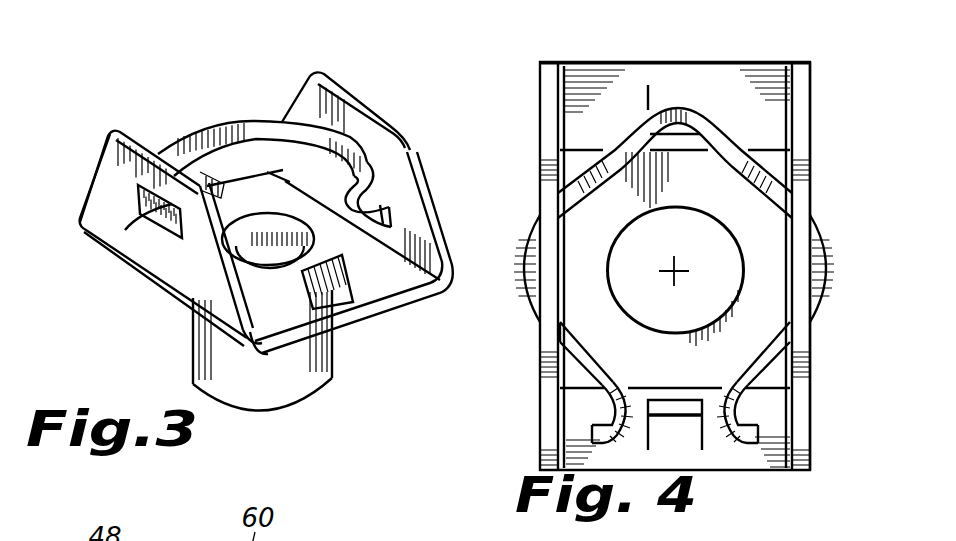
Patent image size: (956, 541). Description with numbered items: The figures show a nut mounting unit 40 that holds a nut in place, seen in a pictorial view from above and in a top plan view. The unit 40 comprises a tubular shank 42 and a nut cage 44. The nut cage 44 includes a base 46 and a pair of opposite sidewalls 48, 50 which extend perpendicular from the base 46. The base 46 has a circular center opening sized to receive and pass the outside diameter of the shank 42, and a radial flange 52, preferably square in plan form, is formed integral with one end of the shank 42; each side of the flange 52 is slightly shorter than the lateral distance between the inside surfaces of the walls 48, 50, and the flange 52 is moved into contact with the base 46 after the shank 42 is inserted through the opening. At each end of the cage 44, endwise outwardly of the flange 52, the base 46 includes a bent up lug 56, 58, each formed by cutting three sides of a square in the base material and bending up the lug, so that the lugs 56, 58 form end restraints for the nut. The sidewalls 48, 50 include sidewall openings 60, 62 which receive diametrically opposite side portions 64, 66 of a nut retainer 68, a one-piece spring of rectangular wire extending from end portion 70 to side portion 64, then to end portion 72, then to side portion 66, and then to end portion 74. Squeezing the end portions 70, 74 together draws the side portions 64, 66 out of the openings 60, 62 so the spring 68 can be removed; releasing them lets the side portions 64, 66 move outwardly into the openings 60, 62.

In FIG. 3, the nut mounting unit 40 is at (172, 340).
In FIG. 4, the nut mounting unit 40 is at (505, 378).
In FIG. 3, the tubular shank 42 is at (281, 387).
In FIG. 3, the nut cage 44 is at (366, 325).
In FIG. 4, the nut cage 44 is at (603, 62).
In FIG. 3, the base 46 is at (390, 292).
In FIG. 4, the base 46 is at (770, 118).
In FIG. 3, the sidewall 48 is at (140, 238).
In FIG. 4, the sidewall 48 is at (521, 266).
In FIG. 3, the sidewall 50 is at (338, 118).
In FIG. 4, the sidewall 50 is at (837, 266).
In FIG. 4, the radial flange 52 is at (675, 406).
In FIG. 3, the bent up lug 56 is at (312, 150).
In FIG. 4, the bent up lug 56 is at (675, 116).
In FIG. 3, the bent up lug 58 is at (332, 291).
In FIG. 4, the bent up lug 58 is at (690, 432).
In FIG. 3, the sidewall opening 60 is at (133, 258).
In FIG. 3, the sidewall opening 62 is at (360, 142).
In FIG. 3, the side portion 64 is at (100, 237).
In FIG. 4, the side portion 64 is at (520, 283).
In FIG. 4, the side portion 66 is at (816, 280).
In FIG. 4, the nut retainer 68 is at (772, 404).
In FIG. 3, the end portion 70 is at (190, 293).
In FIG. 4, the end portion 70 is at (550, 447).
In FIG. 4, the end portion 72 is at (652, 116).
In FIG. 3, the end portion 74 is at (395, 219).
In FIG. 4, the end portion 74 is at (760, 432).